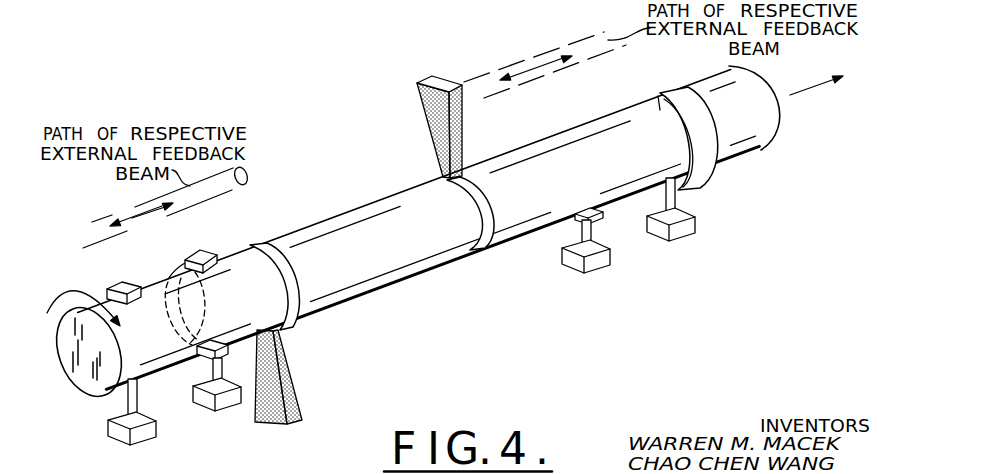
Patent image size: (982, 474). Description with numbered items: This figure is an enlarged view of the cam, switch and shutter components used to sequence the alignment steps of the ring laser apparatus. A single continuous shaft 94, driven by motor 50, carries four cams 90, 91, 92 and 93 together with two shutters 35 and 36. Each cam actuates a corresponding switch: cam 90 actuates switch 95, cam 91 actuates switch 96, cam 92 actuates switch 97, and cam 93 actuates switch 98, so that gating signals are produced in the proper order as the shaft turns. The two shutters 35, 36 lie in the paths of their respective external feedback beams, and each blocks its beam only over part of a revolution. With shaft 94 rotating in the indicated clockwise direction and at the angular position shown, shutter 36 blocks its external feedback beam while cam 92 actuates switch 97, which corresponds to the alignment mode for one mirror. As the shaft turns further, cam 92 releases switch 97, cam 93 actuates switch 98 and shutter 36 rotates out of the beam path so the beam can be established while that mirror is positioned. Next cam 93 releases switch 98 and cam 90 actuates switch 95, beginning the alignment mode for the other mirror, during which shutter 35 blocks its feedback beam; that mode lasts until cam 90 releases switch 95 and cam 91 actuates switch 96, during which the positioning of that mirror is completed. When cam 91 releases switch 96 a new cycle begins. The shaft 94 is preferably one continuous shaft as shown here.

The shutter 35 is at (288, 424).
The shutter 36 is at (420, 104).
The motor 50 is at (827, 80).
The cam 90 is at (130, 282).
The cam 91 is at (207, 256).
The cam 92 is at (601, 216).
The cam 93 is at (714, 171).
The shaft 94 is at (381, 290).
The switch 95 is at (122, 432).
The switch 96 is at (211, 407).
The switch 97 is at (576, 272).
The switch 98 is at (697, 223).